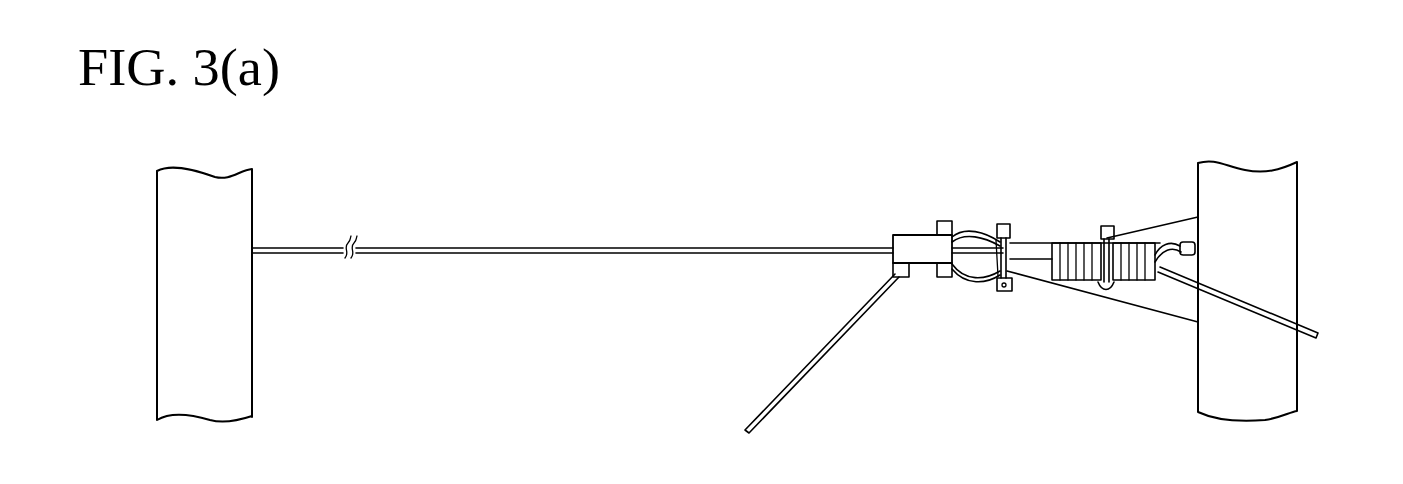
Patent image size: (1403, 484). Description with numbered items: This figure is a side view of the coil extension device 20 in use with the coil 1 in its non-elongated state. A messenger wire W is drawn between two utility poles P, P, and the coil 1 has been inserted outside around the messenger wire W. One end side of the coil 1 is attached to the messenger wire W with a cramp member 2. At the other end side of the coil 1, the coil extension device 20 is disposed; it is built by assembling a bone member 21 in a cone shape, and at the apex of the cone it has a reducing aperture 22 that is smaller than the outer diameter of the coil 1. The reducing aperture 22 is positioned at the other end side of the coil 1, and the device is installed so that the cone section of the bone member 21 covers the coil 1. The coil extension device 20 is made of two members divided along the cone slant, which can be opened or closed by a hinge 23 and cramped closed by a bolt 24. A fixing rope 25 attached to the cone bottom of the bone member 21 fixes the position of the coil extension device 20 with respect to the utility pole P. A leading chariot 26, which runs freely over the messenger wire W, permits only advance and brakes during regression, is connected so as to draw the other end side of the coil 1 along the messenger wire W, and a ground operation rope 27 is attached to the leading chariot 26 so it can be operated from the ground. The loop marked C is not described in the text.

The coil 1 is at (1121, 286).
The cramp member 2 is at (1190, 240).
The coil extension device 20 is at (1055, 237).
The bone member 21 is at (1080, 240).
The reducing aperture 22 is at (992, 240).
The hinge 23 is at (1004, 232).
The bolt 24 is at (1005, 290).
The fixing rope 25 is at (1158, 318).
The leading chariot 26 is at (904, 234).
The ground operation rope 27 is at (833, 343).
The loop C is at (954, 234).
The messenger wire W is at (414, 247).
The utility pole P is at (244, 367).